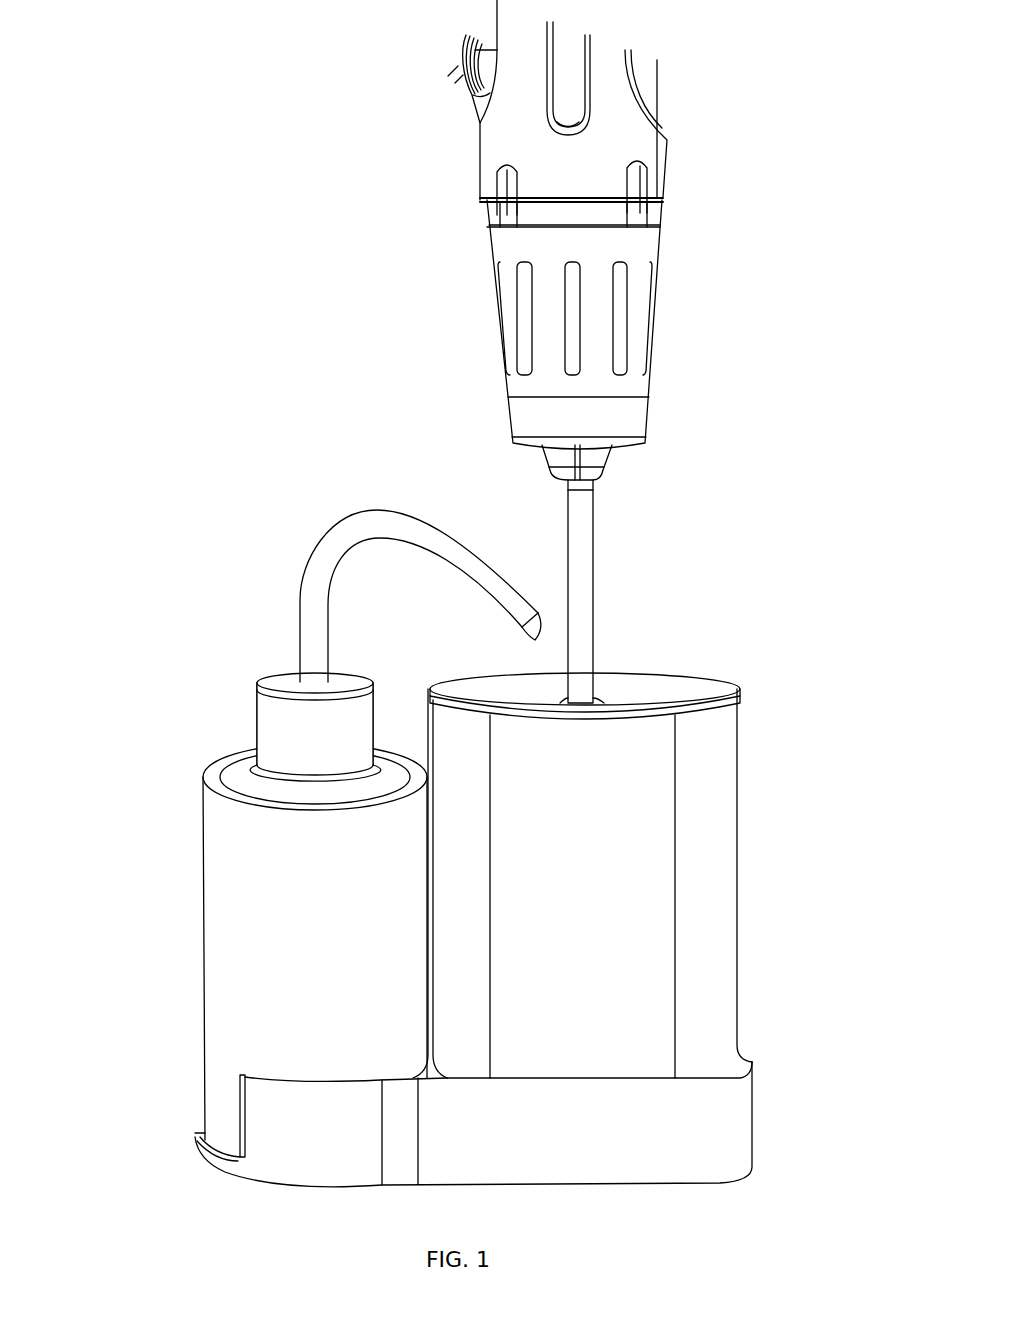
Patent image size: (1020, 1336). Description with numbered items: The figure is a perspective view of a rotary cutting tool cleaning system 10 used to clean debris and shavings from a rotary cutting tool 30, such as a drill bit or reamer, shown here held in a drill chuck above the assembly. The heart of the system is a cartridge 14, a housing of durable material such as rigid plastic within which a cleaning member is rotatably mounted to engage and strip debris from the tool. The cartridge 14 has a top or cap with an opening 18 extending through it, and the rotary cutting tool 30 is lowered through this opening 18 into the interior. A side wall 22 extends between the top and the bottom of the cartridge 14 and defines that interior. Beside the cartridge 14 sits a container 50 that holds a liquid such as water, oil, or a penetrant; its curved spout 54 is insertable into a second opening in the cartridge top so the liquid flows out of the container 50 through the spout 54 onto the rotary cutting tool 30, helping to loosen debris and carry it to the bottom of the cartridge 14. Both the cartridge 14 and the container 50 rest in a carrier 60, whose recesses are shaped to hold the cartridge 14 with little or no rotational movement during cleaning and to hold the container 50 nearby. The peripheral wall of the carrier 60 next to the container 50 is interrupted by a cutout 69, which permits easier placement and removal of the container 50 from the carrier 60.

The rotary cutting tool cleaning system 10 is at (270, 497).
The cartridge 14 is at (623, 850).
The opening 18 is at (596, 700).
The side wall 22 is at (712, 907).
The rotary cutting tool 30 is at (588, 566).
The container 50 is at (215, 860).
The spout 54 is at (390, 512).
The carrier 60 is at (480, 1121).
The cutout 69 is at (196, 1133).